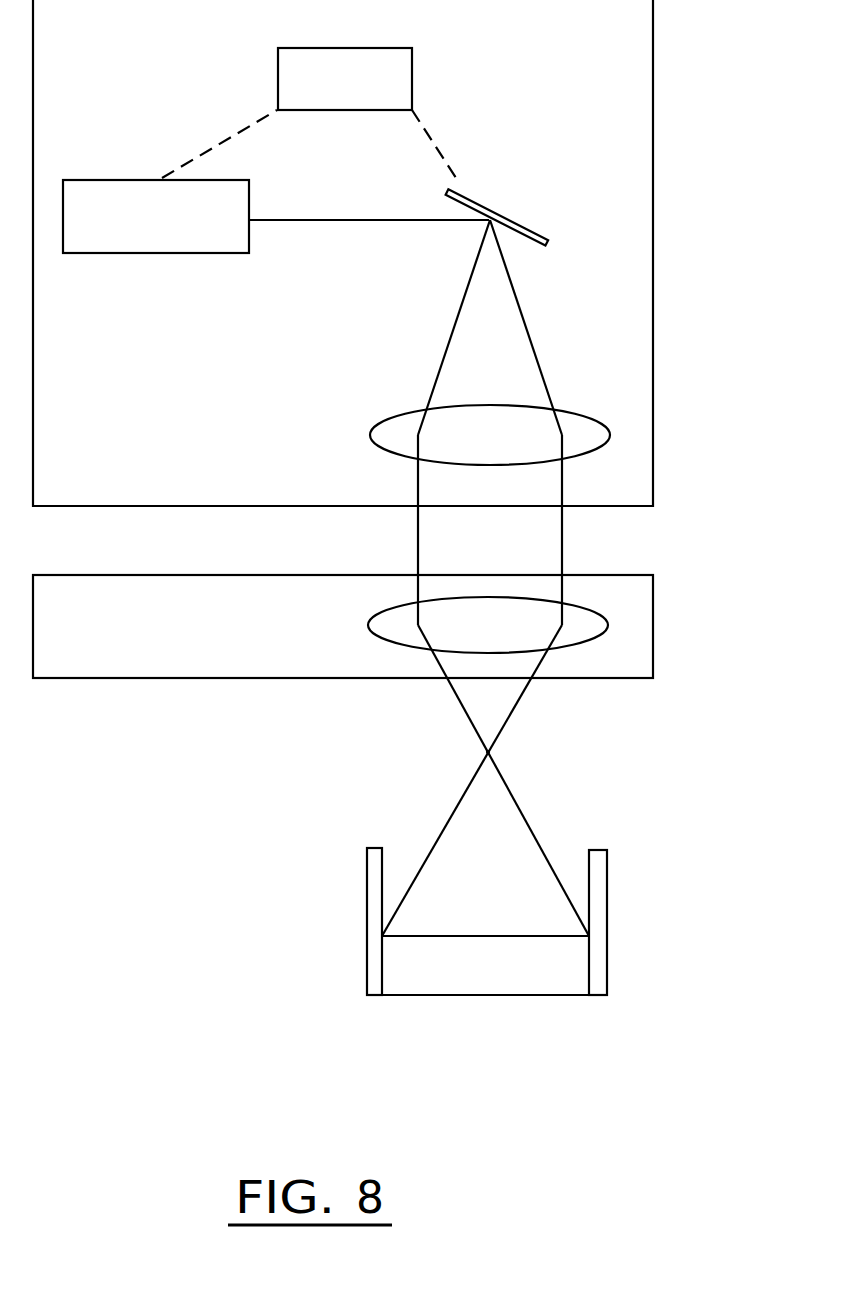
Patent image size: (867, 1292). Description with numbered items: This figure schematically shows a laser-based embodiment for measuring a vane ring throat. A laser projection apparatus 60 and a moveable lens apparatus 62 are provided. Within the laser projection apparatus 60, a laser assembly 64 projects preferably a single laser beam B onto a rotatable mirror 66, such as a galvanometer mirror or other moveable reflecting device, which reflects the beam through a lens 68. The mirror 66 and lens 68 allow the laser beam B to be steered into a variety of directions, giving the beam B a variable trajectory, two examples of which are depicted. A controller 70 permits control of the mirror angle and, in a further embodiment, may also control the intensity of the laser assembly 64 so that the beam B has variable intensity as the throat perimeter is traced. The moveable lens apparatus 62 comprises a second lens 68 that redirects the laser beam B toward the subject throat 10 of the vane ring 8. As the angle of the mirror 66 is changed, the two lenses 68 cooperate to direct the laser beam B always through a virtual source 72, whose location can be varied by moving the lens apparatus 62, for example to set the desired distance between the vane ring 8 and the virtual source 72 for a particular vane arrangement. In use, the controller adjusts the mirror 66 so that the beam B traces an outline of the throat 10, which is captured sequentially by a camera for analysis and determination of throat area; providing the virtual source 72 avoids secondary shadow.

The vane ring 8 is at (597, 925).
The throat 10 is at (405, 960).
The laser projection apparatus 60 is at (343, 253).
The moveable lens apparatus 62 is at (343, 626).
The laser assembly 64 is at (156, 216).
The rotatable mirror 66 is at (516, 222).
The lens 68 is at (610, 435).
The controller 70 is at (310, 114).
The virtual source 72 is at (490, 752).
The laser beam B is at (346, 222).